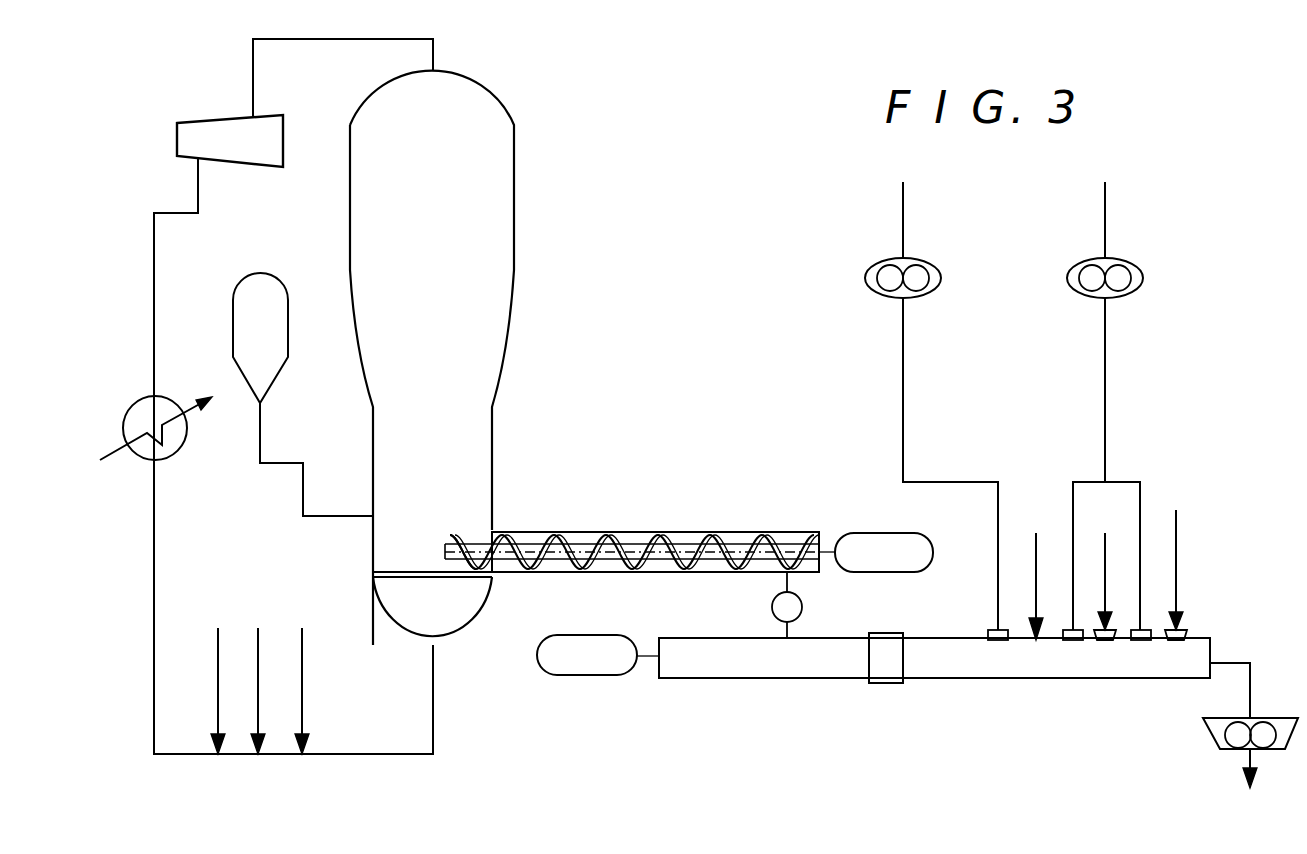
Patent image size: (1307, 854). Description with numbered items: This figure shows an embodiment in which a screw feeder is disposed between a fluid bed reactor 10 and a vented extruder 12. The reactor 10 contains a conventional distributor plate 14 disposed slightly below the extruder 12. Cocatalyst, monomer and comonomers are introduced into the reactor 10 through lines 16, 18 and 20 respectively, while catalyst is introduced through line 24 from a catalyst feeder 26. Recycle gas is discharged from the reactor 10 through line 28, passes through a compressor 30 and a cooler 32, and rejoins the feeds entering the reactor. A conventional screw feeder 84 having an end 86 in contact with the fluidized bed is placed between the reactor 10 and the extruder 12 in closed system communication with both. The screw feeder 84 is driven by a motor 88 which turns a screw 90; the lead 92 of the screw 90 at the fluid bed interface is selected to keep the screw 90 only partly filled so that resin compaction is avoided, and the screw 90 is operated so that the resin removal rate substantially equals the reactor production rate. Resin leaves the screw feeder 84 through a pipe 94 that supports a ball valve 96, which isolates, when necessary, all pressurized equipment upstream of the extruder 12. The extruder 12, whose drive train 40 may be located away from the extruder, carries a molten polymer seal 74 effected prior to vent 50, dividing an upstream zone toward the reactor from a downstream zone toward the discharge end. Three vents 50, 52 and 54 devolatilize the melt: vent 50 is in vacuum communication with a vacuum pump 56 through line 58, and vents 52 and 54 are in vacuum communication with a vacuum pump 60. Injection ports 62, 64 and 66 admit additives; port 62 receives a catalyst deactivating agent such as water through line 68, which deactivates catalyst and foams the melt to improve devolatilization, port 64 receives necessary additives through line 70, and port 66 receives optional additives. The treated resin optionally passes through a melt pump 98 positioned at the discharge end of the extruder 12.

The fluid bed reactor 10 is at (515, 233).
The extruder 12 is at (703, 665).
The distributor plate 14 is at (398, 570).
The line 16 is at (216, 680).
The line 18 is at (256, 672).
The line 20 is at (303, 660).
The line 24 is at (306, 491).
The catalyst feeder 26 is at (233, 318).
The line 28 is at (301, 42).
The compressor 30 is at (212, 117).
The cooler 32 is at (168, 461).
The drive train 40 is at (540, 668).
The vent 50 is at (990, 630).
The vent 52 is at (1078, 630).
The vent 54 is at (1145, 630).
The vacuum pump 56 is at (930, 265).
The line 58 is at (905, 370).
The vacuum pump 60 is at (1138, 265).
The injection port 62 is at (1034, 638).
The injection port 64 is at (1110, 632).
The injection port 66 is at (1182, 632).
The line 68 is at (1037, 555).
The line 70 is at (1106, 555).
The seal 74 is at (882, 635).
The screw feeder 84 is at (530, 532).
The end 86 is at (445, 548).
The motor 88 is at (882, 533).
The screw 90 is at (640, 540).
The lead 92 is at (468, 530).
The pipe 94 is at (789, 628).
The ball valve 96 is at (803, 600).
The melt pump 98 is at (1273, 718).